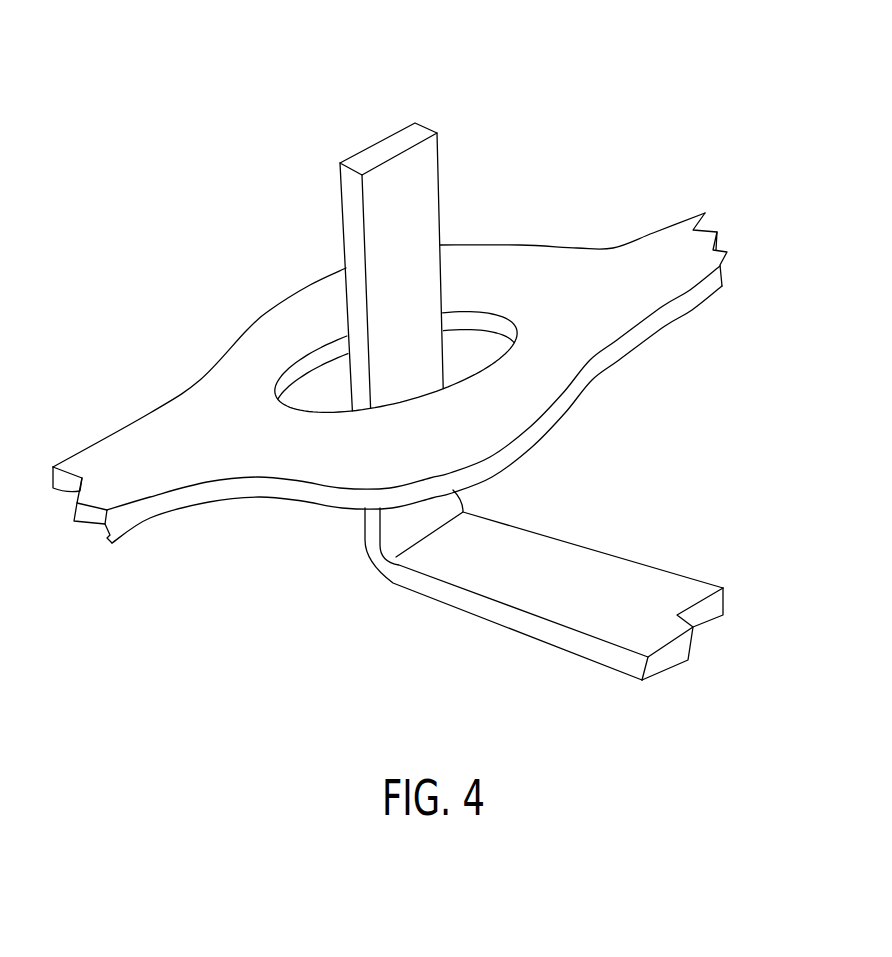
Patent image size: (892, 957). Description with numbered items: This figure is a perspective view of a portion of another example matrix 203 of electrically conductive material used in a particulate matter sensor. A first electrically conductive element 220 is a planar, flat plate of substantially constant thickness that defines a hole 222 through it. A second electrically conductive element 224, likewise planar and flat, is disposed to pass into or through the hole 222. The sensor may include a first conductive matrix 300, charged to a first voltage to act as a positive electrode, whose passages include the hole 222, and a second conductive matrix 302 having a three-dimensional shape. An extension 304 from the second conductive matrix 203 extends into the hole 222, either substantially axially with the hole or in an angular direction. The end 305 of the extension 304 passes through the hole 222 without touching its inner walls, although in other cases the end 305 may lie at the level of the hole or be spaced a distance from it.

The matrix 203 is at (246, 115).
The first electrically conductive element 220 is at (575, 247).
The hole 222 is at (306, 389).
The second electrically conductive element 224 is at (582, 547).
The first conductive matrix 300 is at (712, 583).
The second conductive matrix 302 is at (720, 290).
The extension 304 is at (439, 134).
The end 305 is at (387, 147).